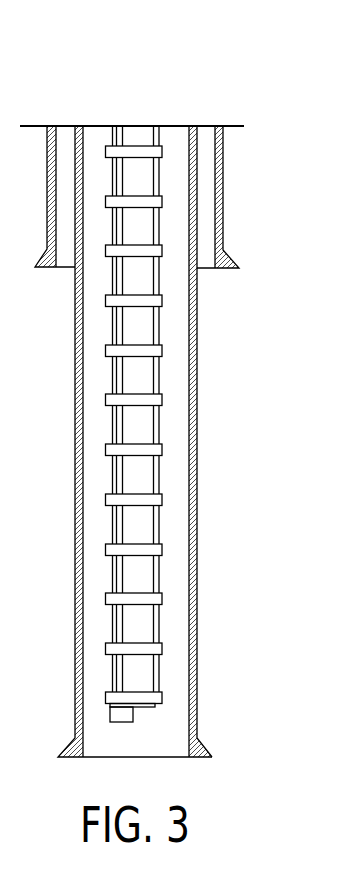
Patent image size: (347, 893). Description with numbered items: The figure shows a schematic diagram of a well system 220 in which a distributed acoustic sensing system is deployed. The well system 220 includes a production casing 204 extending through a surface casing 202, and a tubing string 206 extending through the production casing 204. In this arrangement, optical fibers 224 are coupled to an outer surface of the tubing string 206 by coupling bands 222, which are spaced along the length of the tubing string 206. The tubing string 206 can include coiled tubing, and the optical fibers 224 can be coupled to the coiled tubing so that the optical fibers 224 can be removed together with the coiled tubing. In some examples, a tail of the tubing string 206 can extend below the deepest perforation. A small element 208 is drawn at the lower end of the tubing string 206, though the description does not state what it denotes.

The well system 220 is at (193, 87).
The surface casing 202 is at (244, 203).
The production casing 204 is at (213, 301).
The coupling bands 222 is at (182, 356).
The optical fibers 224 is at (143, 432).
The tubing string 206 is at (175, 524).
The end cap 208 is at (153, 716).